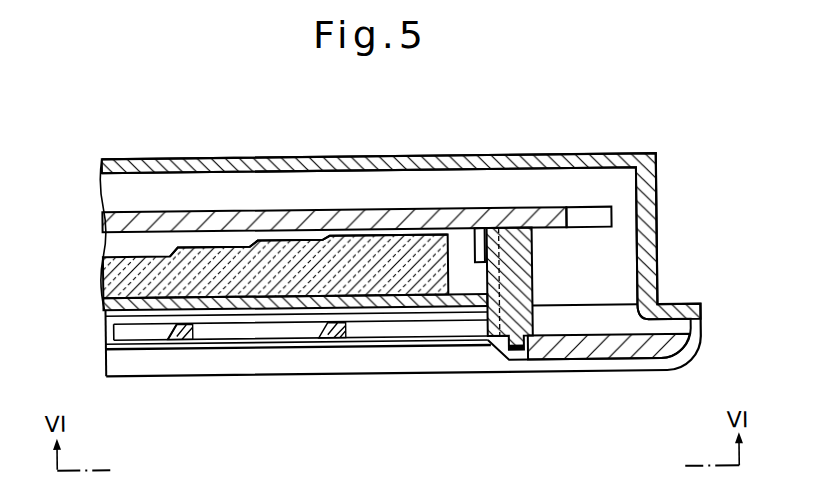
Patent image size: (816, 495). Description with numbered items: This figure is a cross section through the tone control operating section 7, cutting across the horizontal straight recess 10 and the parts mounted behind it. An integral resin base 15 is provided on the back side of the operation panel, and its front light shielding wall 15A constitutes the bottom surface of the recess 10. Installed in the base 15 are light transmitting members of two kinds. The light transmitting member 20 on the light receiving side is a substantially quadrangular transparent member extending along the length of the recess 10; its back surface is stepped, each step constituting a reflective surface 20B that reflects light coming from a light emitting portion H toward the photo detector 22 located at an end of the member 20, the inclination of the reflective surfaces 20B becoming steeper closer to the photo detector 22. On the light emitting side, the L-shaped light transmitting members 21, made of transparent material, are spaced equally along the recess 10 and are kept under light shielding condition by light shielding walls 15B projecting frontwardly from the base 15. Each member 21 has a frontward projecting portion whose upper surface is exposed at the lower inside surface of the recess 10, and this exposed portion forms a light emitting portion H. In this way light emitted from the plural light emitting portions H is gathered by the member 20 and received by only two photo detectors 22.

The tone control operating section 7 is at (320, 372).
The horizontal straight recess 10 is at (272, 360).
The base 15 is at (534, 280).
The front light shielding wall 15A is at (457, 306).
The light shielding walls 15B is at (219, 334).
The light transmitting member 20 is at (110, 276).
The reflective surface 20B is at (256, 244).
The light transmitting member 21 is at (160, 338).
The photo detector 22 is at (482, 243).
The light emitting portion H is at (182, 338).